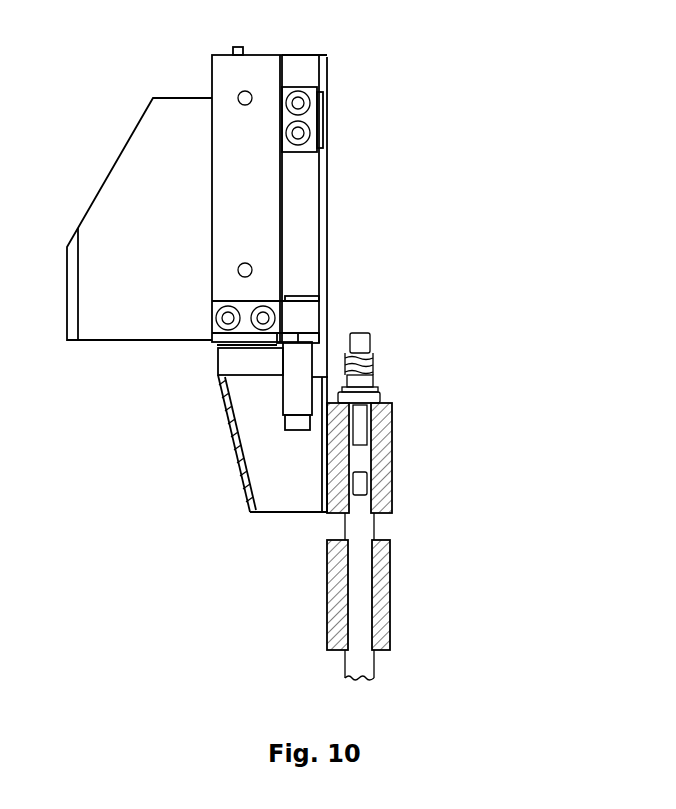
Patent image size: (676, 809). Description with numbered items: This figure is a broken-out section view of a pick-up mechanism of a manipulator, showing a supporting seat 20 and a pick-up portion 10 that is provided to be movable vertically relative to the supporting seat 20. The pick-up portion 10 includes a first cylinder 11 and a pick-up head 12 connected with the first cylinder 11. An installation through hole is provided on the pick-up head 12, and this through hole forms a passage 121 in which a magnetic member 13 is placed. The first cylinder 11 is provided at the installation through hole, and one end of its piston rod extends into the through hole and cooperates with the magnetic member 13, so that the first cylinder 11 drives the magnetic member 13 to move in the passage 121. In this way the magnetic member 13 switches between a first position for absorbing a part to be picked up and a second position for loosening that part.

The pick-up portion 10 is at (421, 464).
The first cylinder 11 is at (373, 365).
The pick-up head 12 is at (390, 567).
The passage 121 is at (312, 611).
The magnetic member 13 is at (329, 513).
The supporting seat 20 is at (140, 297).